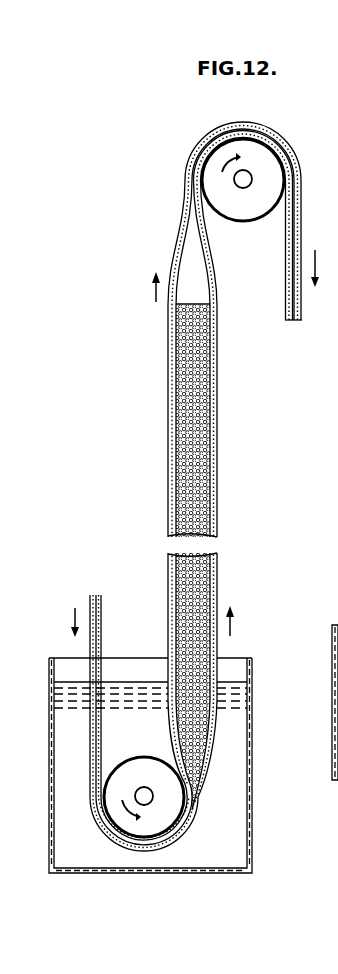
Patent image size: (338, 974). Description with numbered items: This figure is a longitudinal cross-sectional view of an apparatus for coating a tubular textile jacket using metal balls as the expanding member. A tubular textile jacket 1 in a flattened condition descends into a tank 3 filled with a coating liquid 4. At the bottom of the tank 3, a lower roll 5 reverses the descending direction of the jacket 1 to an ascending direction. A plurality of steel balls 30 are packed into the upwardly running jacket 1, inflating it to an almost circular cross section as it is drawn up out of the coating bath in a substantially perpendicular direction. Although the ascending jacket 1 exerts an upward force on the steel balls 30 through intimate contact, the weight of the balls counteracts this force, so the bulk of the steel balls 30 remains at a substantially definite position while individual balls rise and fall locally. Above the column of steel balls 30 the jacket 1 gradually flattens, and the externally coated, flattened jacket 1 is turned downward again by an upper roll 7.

The tubular textile jacket 1 is at (216, 470).
The tank 3 is at (115, 874).
The coating liquid 4 is at (62, 753).
The lower roll 5 is at (168, 812).
The upper roll 7 is at (245, 213).
The steel balls 30 is at (216, 379).